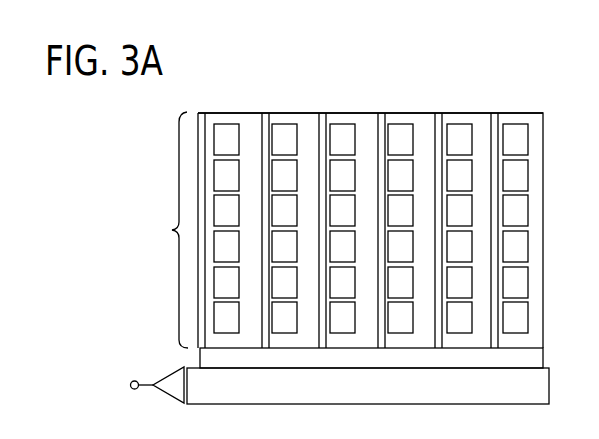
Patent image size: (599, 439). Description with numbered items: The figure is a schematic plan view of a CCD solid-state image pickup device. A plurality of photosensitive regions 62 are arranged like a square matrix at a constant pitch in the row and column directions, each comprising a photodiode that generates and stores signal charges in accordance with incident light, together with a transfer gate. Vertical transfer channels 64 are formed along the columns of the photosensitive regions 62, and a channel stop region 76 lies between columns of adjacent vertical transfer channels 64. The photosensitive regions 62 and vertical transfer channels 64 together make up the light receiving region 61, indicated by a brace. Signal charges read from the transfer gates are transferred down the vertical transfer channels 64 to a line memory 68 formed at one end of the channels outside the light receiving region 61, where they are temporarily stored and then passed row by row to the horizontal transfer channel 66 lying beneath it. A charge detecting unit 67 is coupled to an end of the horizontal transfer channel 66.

The light receiving region 61 is at (342, 230).
The photosensitive region 62 is at (227, 130).
The vertical transfer channel 64 is at (252, 128).
The channel stop region 76 is at (268, 115).
The line memory 68 is at (533, 358).
The horizontal transfer channel 66 is at (537, 393).
The charge detecting unit 67 is at (175, 390).